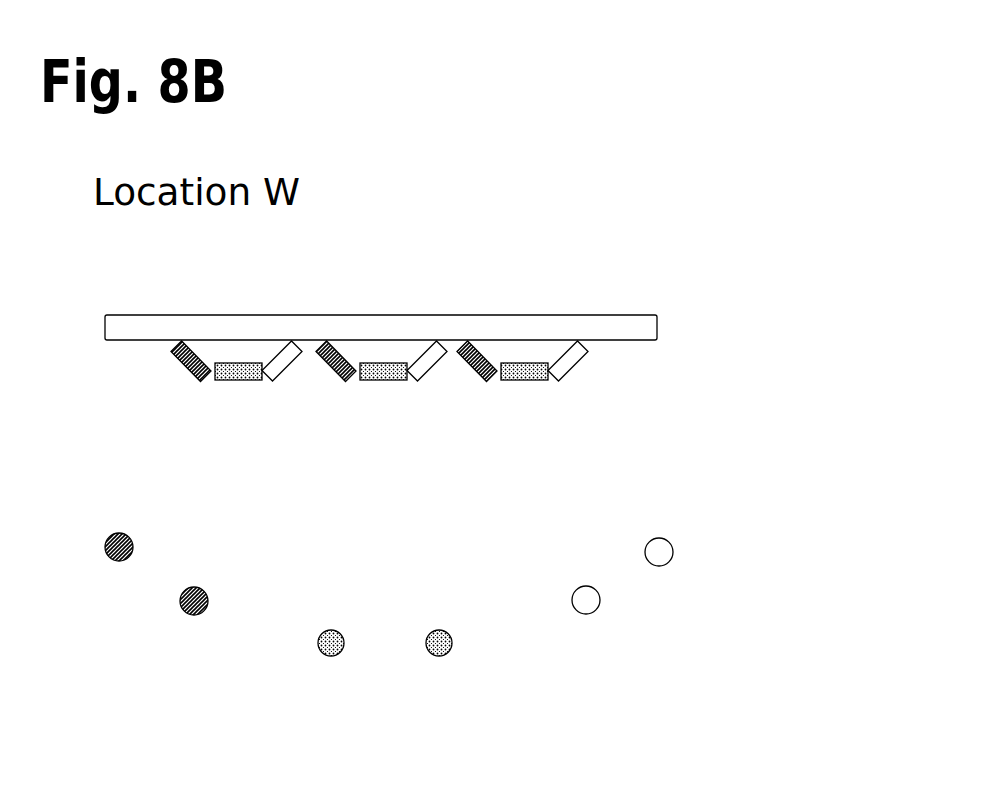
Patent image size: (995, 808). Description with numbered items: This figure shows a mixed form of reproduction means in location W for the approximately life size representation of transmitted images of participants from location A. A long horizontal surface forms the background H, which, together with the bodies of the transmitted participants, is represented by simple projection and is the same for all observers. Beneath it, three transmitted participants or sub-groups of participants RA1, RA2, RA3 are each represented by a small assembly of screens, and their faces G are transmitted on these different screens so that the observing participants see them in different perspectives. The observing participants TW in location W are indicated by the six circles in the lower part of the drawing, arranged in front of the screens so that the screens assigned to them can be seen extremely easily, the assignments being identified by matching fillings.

The background H is at (642, 328).
The faces of participants G is at (567, 372).
The participants TW is at (670, 560).
The first participant or sub-group of participants in location A RA1 is at (236, 330).
The second participant or sub-group of participants in location A RA2 is at (381, 330).
The third participant or sub-group of participants in location A RA3 is at (504, 330).